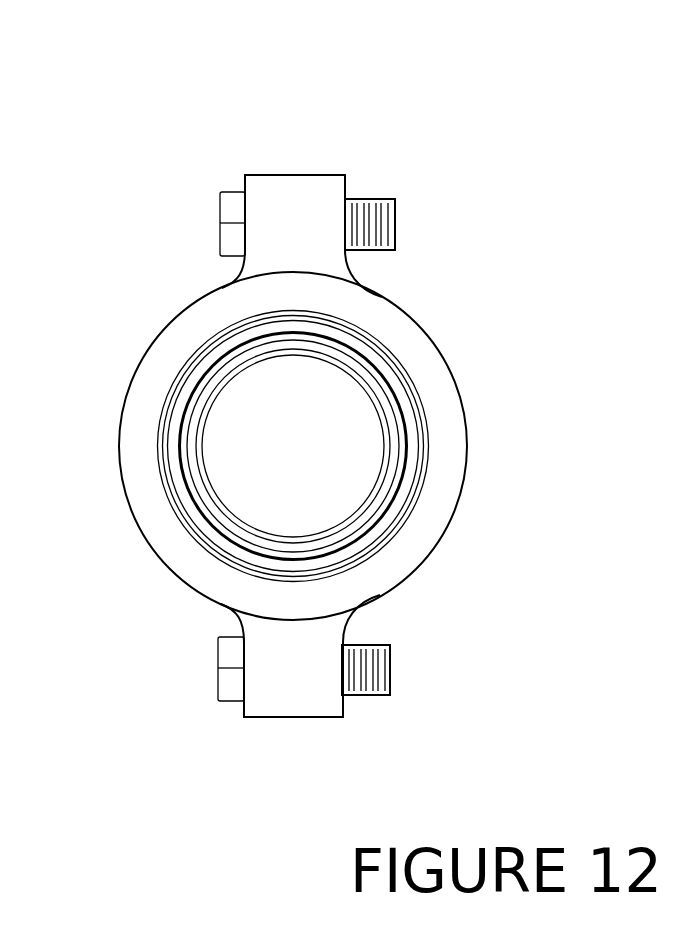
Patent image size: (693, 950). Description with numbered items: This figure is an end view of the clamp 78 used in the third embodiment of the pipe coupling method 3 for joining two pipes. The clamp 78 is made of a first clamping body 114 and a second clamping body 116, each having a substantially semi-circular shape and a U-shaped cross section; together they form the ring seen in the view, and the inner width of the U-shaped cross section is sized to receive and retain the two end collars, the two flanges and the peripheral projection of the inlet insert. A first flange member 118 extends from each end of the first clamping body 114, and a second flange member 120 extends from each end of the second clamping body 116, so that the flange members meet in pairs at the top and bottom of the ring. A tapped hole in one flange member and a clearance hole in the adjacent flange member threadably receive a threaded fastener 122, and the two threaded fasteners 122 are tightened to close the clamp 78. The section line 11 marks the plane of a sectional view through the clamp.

The pipe coupling method 3 is at (407, 138).
The section line 11- 11 is at (293, 43).
The clamp 78 is at (437, 677).
The first clamping body 114 is at (145, 353).
The second clamping body 116 is at (437, 350).
The first flange member 118 is at (262, 190).
The second flange member 120 is at (322, 187).
The threaded fastener 122 is at (395, 218).